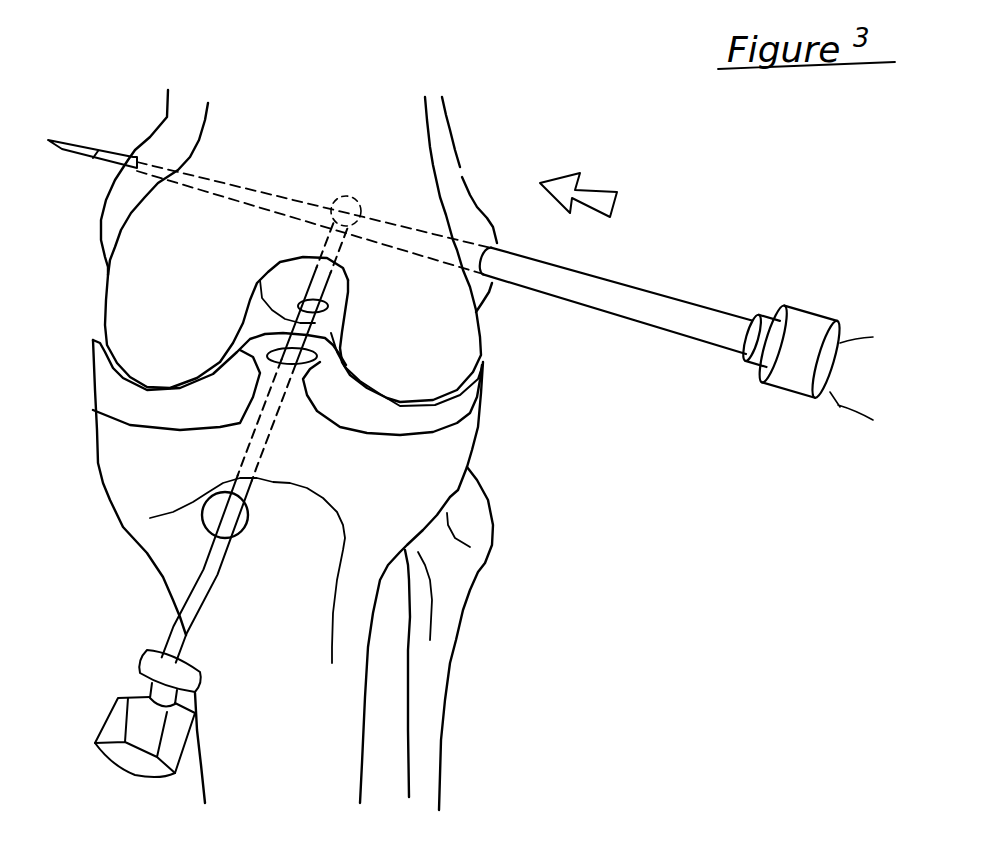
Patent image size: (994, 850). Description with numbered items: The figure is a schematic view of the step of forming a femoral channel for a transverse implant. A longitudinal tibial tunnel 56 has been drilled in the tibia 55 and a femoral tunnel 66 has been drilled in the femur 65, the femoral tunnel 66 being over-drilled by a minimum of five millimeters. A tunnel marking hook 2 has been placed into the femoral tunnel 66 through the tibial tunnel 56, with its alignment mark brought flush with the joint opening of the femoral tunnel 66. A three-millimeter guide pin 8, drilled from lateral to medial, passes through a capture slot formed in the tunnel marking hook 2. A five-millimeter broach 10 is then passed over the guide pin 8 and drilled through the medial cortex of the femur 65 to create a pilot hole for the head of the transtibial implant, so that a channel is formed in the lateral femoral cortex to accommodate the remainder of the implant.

The tunnel marking hook 2 is at (166, 645).
The guide pin 8 is at (78, 143).
The broach 10 is at (601, 278).
The tibia 55 is at (447, 457).
The tibial tunnel 56 is at (248, 522).
The femur 65 is at (453, 338).
The femoral tunnel 66 is at (328, 305).